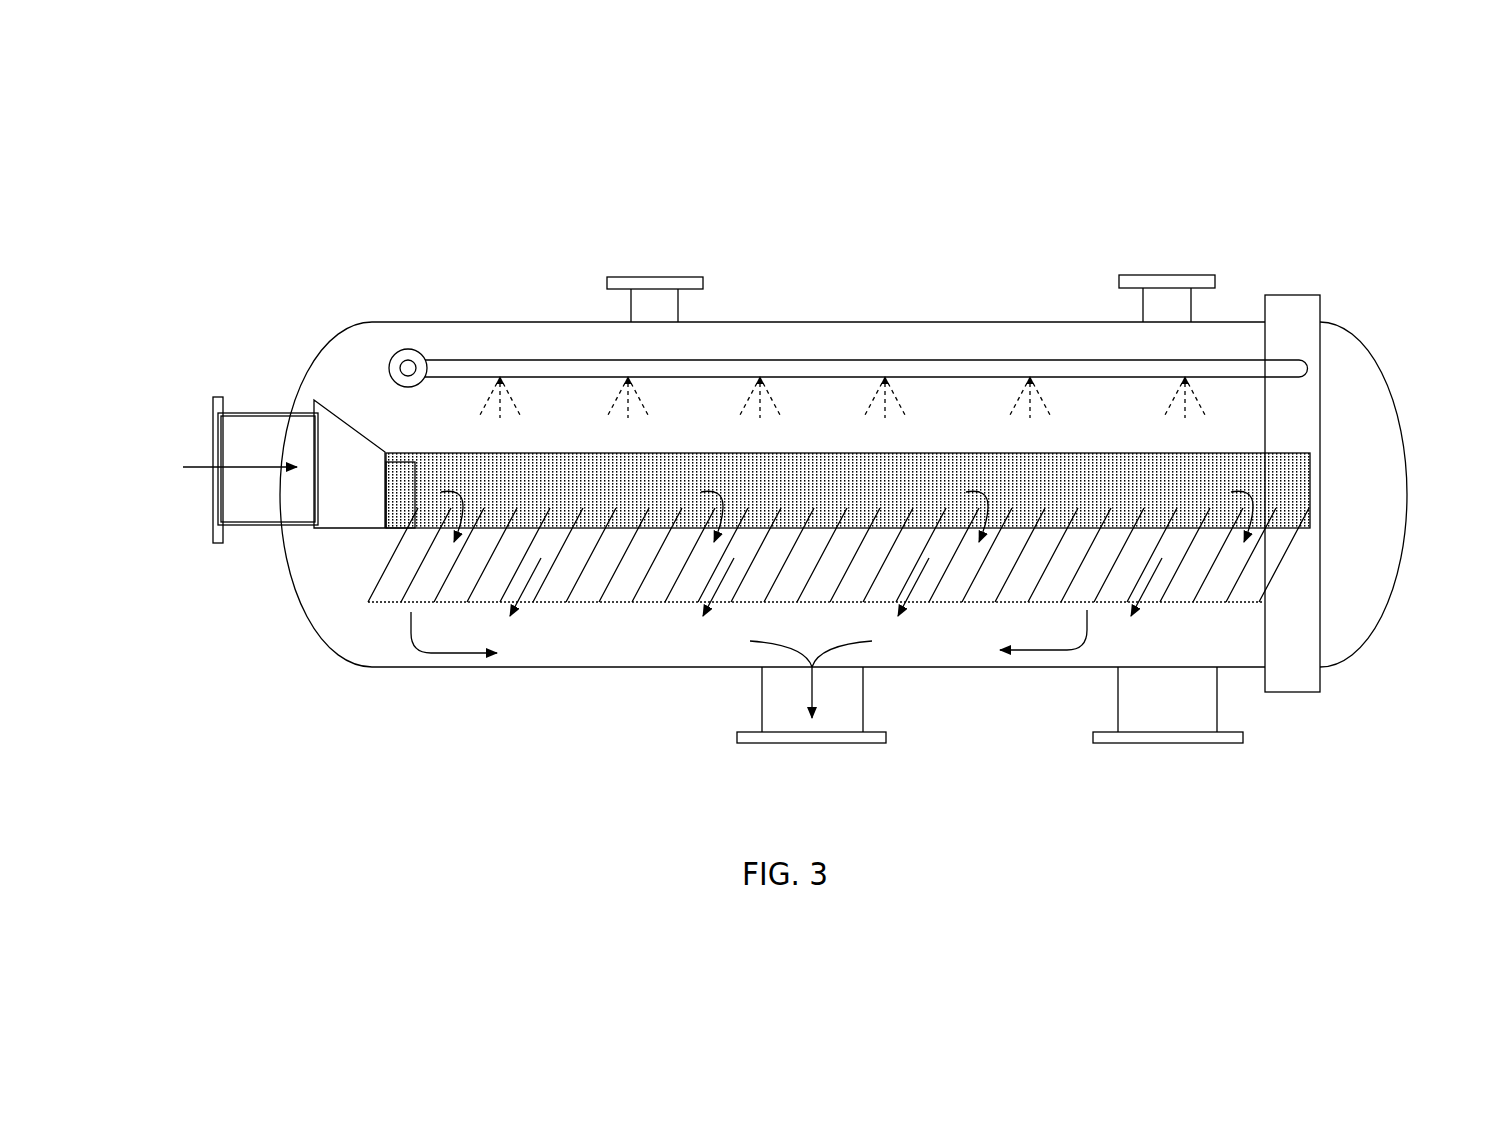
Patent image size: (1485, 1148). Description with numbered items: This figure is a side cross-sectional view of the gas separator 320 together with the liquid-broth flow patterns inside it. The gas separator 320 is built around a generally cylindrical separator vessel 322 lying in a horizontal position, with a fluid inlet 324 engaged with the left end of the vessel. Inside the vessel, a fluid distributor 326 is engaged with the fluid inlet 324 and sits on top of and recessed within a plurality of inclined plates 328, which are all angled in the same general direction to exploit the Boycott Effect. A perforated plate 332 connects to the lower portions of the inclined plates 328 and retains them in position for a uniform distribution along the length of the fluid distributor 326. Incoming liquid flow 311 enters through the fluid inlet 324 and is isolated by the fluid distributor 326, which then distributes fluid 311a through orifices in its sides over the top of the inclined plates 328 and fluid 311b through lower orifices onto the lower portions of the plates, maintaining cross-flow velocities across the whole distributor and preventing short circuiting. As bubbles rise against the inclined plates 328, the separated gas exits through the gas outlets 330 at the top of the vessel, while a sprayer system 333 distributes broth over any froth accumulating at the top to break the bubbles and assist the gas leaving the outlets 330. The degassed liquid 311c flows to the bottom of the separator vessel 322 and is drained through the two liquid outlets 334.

The gas separator 320 is at (796, 199).
The separator vessel 322 is at (1367, 437).
The fluid inlet 324 is at (245, 443).
The fluid distributor 326 is at (443, 478).
The inclined plates 328 is at (392, 567).
The perforated plate 332 is at (392, 610).
The gas outlets 330 is at (660, 278).
The sprayer system 333 is at (395, 352).
The liquid outlets 334 is at (1165, 745).
The liquid flow 311 is at (200, 468).
The liquid flow irrigating top of inclined plates 311a is at (995, 480).
The liquid flow irrigating lower portions of inclined plates 311b is at (517, 612).
The liquid flow with bubbles removed 311c is at (817, 662).